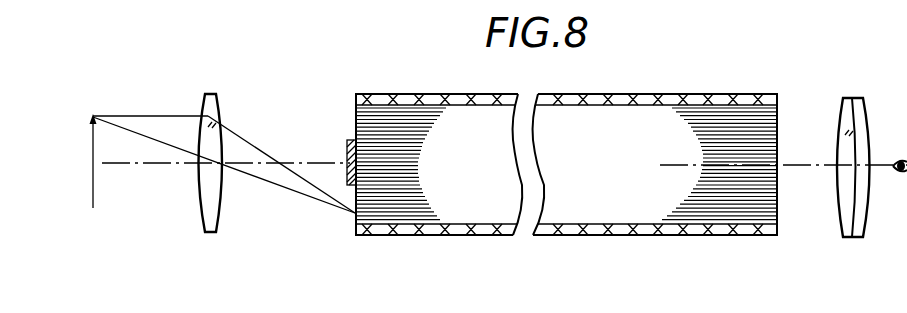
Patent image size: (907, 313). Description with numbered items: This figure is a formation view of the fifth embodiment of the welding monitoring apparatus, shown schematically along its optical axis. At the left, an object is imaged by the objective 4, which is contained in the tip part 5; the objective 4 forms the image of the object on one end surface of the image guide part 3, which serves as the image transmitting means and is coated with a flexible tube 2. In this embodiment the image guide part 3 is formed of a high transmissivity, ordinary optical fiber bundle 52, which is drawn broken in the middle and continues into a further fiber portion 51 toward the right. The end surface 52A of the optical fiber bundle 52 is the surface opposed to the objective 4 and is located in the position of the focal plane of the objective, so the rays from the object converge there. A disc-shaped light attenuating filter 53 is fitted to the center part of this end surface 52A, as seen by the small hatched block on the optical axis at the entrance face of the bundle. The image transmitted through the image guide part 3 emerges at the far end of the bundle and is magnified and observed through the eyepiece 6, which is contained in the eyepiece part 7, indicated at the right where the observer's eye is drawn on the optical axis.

The flexible tube 2 is at (713, 232).
The image guide part 3 is at (410, 158).
The objective 4 is at (210, 78).
The tip part 5 is at (228, 125).
The eyepiece 6 is at (843, 213).
The eyepiece part 7 is at (839, 156).
The graded index fiber portion 51 is at (655, 156).
The optical fiber bundle 52 is at (475, 207).
The end surface 52A is at (355, 195).
The light attenuating filter 53 is at (347, 139).